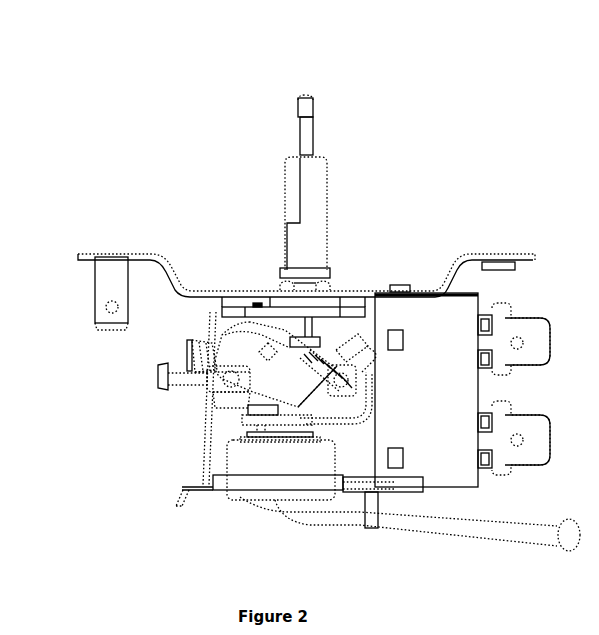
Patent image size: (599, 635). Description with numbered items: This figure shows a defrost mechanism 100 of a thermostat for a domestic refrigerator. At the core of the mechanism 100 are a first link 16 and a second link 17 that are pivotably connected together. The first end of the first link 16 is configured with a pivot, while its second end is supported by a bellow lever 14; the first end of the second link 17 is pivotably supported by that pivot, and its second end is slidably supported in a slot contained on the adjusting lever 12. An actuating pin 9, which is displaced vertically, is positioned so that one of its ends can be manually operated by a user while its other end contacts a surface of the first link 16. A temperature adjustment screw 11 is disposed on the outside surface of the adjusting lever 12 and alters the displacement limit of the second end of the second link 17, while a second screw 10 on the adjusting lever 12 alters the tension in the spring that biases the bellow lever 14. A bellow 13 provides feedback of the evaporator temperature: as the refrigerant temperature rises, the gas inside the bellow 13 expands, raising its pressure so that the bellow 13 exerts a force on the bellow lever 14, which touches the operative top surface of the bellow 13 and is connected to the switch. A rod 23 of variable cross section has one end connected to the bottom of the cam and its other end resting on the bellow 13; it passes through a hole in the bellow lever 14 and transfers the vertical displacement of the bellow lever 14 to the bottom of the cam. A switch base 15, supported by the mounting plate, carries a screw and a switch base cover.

The defrost mechanism 100 is at (405, 88).
The actuating pin 9 is at (300, 112).
The second screw 10 is at (188, 357).
The temperature adjustment screw 11 is at (162, 373).
The adjusting lever 12 is at (205, 440).
The bellow 13 is at (277, 455).
The bellow lever 14 is at (322, 423).
The switch base 15 is at (462, 392).
The first link 16 is at (297, 368).
The second link 17 is at (253, 352).
The rod 23 is at (257, 400).